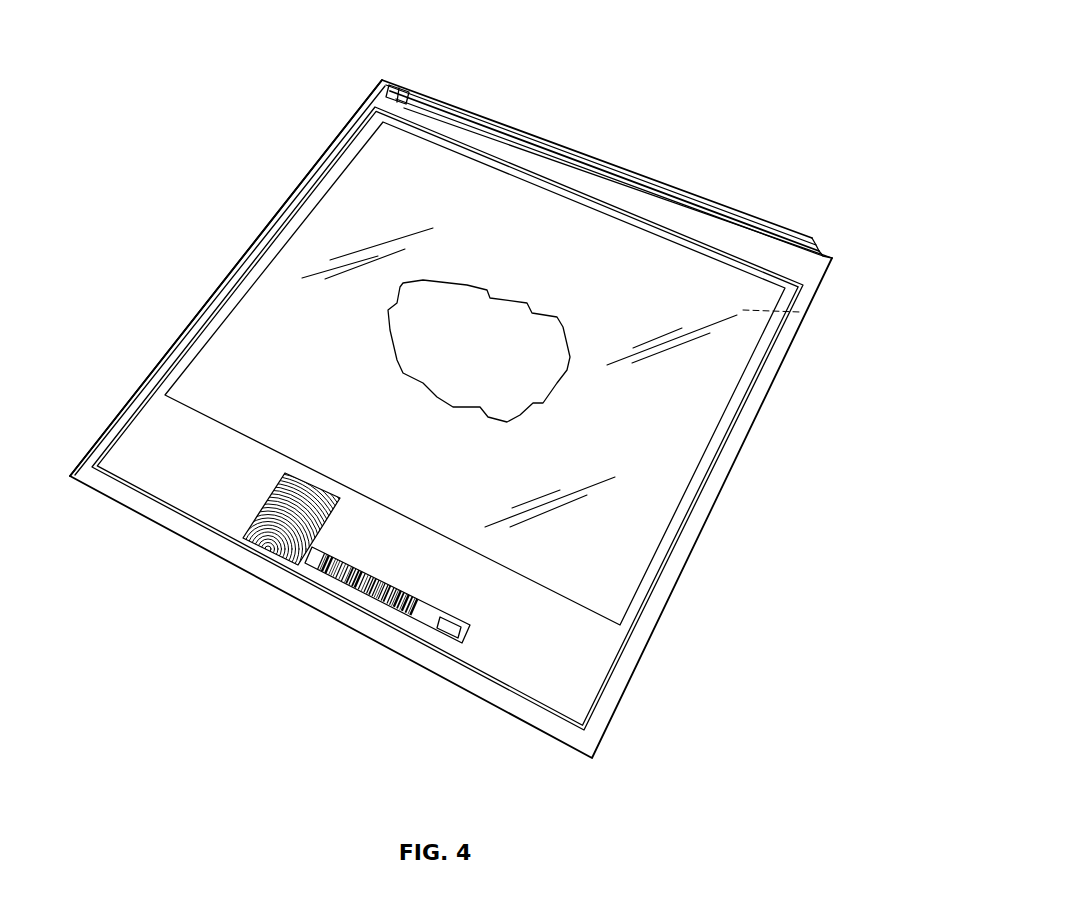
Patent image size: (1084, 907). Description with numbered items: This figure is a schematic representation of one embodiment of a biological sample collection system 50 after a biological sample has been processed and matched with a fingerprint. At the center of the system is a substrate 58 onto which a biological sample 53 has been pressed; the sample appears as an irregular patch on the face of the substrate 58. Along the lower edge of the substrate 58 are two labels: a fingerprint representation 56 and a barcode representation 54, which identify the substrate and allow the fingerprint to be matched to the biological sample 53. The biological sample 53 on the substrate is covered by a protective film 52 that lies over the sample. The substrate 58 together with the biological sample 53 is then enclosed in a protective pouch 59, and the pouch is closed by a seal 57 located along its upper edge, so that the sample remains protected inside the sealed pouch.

The biological sample collection system 50 is at (451, 392).
The protective film 52 is at (246, 291).
The biological sample 53 is at (415, 322).
The barcode representation 54 is at (393, 605).
The fingerprint representation 56 is at (258, 512).
The seal 57 is at (403, 89).
The substrate 58 is at (578, 668).
The protective pouch 59 is at (176, 342).